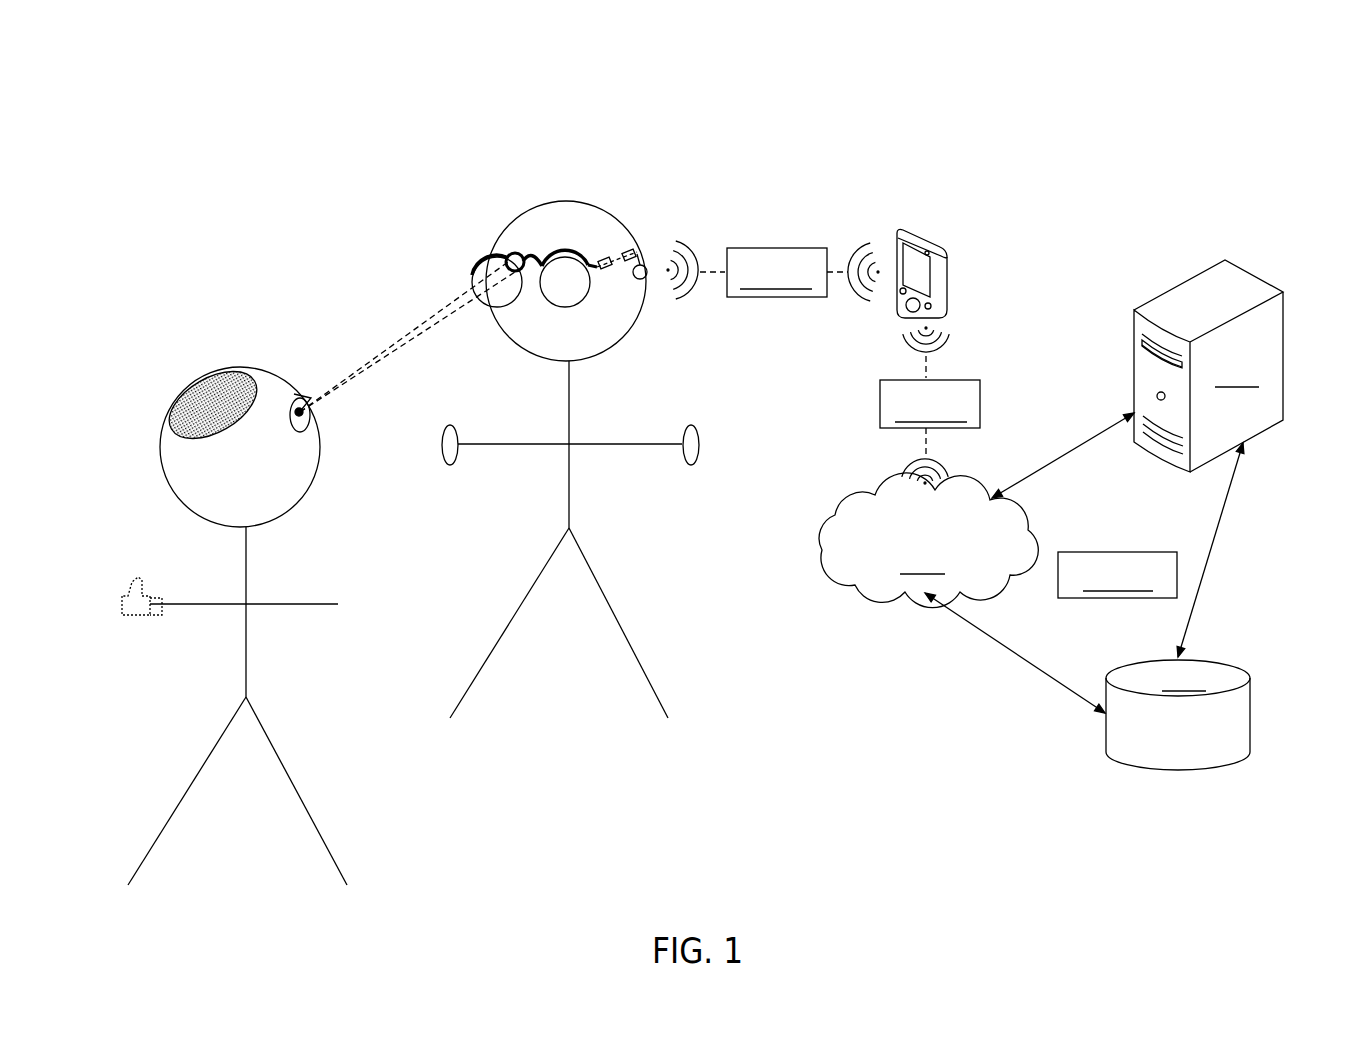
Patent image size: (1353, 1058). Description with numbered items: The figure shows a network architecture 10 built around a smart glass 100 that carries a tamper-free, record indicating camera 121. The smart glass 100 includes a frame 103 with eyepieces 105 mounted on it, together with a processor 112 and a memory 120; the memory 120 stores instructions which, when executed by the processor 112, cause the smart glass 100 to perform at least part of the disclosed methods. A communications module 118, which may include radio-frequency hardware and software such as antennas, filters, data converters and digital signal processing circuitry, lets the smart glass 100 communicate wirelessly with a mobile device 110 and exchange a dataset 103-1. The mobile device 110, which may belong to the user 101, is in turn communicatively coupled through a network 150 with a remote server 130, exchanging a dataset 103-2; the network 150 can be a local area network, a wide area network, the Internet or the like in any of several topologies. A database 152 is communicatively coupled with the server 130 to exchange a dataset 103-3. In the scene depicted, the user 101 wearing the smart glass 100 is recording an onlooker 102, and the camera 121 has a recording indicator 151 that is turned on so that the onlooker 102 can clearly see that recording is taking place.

The network architecture 10 is at (1055, 108).
The smart glass 100 is at (523, 266).
The user 101 is at (638, 657).
The onlooker 102 is at (300, 797).
The frame 103 is at (478, 262).
The dataset 103-1 is at (773, 271).
The dataset 103-2 is at (930, 405).
The dataset 103-3 is at (1117, 575).
The eyepieces 105 is at (560, 293).
The mobile device 110 is at (947, 252).
The processor 112 is at (606, 248).
The communications module 118 is at (641, 279).
The memory 120 is at (634, 240).
The camera 121 is at (516, 252).
The remote server 130 is at (1208, 366).
The network 150 is at (928, 540).
The recording indicator 151 is at (510, 255).
The database 152 is at (1178, 715).